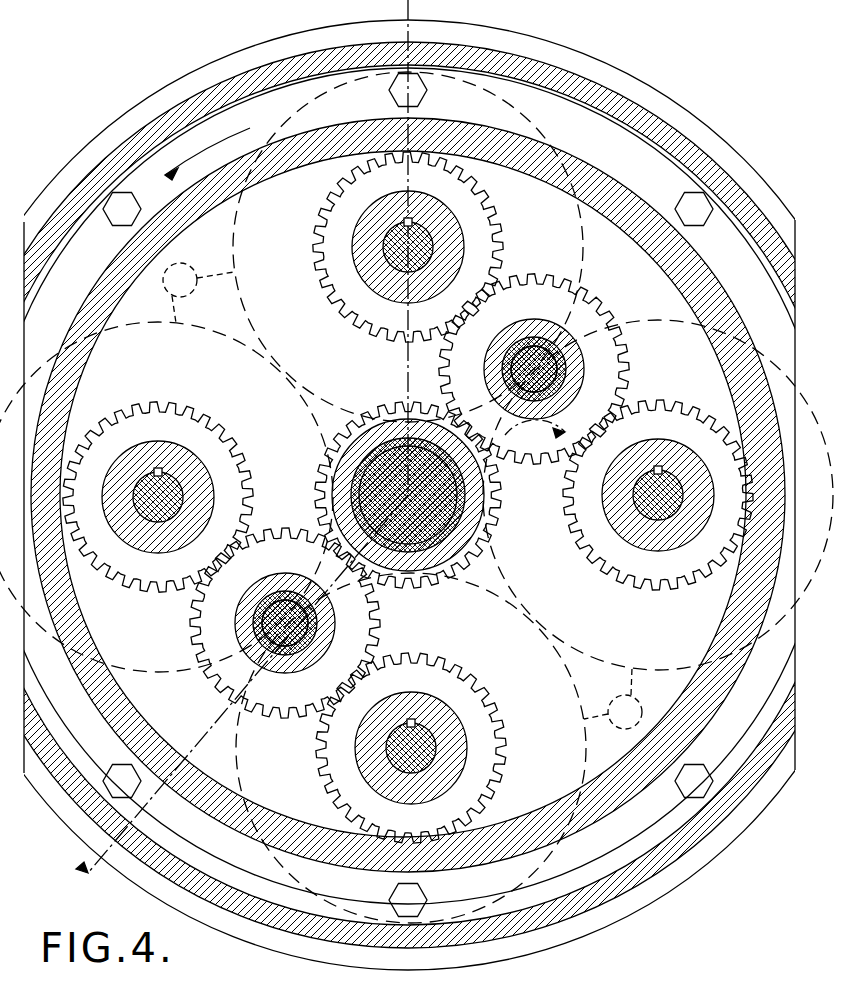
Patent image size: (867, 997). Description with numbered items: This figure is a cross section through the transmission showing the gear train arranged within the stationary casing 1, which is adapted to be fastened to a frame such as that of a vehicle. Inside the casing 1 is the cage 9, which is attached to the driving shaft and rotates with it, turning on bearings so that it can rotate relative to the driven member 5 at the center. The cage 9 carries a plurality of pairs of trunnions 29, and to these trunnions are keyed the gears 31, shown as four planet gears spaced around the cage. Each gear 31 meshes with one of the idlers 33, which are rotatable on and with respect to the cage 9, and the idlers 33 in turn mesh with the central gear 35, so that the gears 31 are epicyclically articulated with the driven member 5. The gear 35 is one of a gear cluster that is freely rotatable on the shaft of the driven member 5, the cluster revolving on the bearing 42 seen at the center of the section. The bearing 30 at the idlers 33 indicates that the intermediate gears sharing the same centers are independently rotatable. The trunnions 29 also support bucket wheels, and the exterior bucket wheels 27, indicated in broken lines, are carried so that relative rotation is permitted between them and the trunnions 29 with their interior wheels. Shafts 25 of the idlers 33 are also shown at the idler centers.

The stationary casing 1 is at (665, 130).
The cage 9 is at (673, 178).
The exterior bucket wheels 27 is at (402, 496).
The gears 31 is at (487, 208).
The trunnions 29 is at (384, 248).
The idlers 33 is at (597, 309).
The bearing 30 is at (570, 367).
The intermediate gear shafts 25 is at (524, 369).
The gear 35 is at (420, 586).
The driven member 5 is at (370, 491).
The bearing 42 is at (463, 498).